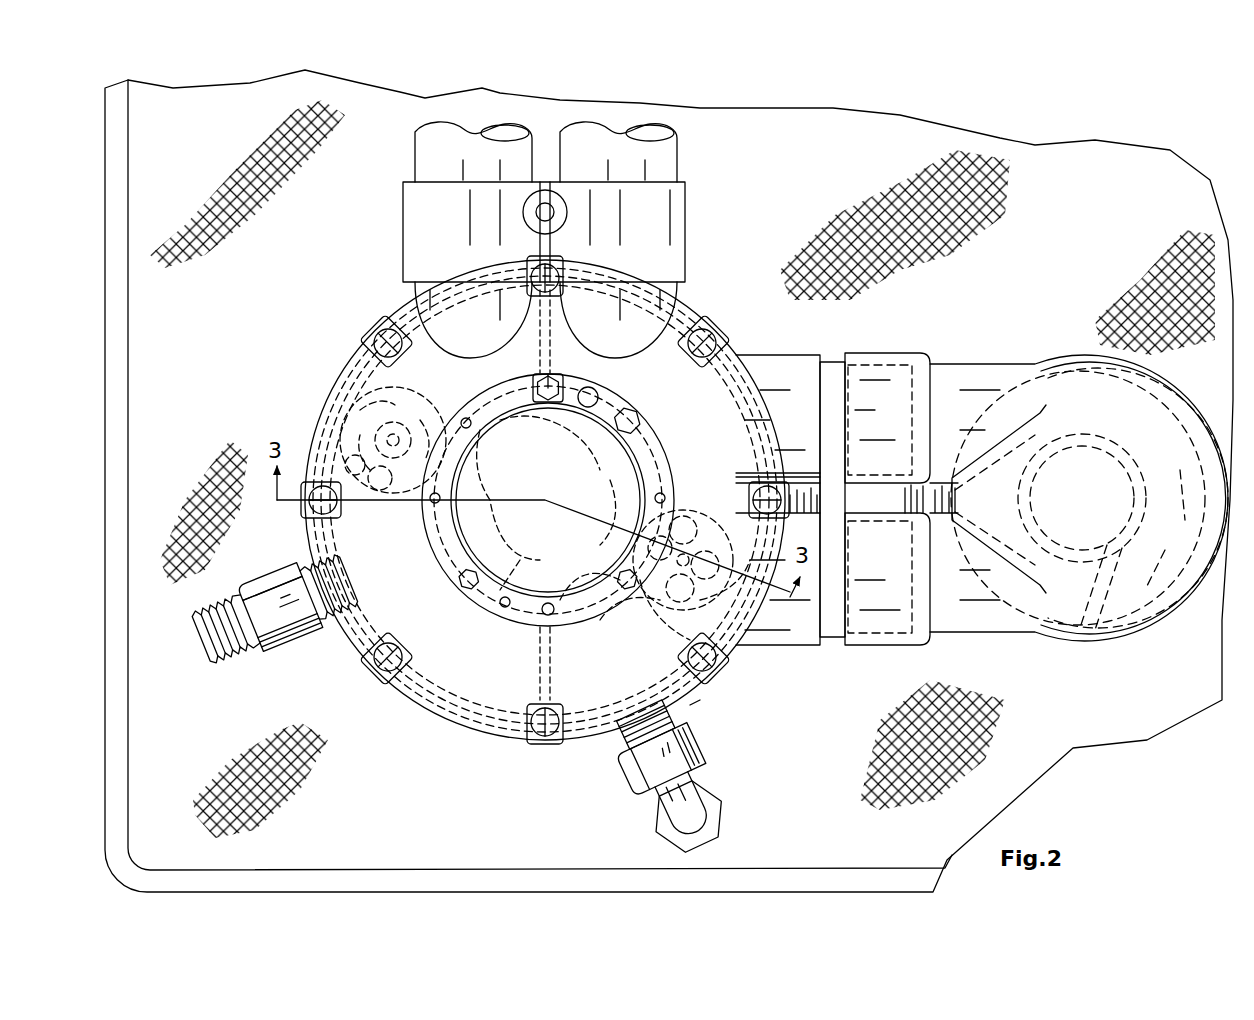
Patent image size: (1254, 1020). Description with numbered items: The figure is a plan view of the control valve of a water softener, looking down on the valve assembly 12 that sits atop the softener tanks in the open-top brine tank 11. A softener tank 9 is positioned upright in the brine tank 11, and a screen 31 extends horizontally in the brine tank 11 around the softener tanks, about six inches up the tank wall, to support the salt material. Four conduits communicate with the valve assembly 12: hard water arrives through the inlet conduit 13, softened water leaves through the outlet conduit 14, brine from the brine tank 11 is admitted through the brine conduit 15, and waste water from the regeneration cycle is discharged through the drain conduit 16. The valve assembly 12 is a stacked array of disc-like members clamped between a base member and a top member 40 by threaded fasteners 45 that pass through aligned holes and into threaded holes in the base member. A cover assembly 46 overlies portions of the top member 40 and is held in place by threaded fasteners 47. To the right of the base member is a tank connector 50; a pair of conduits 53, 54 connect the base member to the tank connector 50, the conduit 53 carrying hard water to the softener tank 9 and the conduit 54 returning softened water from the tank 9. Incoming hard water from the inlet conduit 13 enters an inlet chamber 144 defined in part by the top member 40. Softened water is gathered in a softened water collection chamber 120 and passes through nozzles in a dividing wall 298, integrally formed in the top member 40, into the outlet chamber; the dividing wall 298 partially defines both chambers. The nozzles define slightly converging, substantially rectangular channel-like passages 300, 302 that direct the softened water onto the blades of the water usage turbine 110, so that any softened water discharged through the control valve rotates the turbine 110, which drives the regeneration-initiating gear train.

The softener tank 9 is at (1068, 646).
The brine tank 11 is at (446, 826).
The valve assembly 12 is at (735, 322).
The inlet conduit 13 is at (415, 220).
The outlet conduit 14 is at (680, 205).
The brine conduit 15 is at (696, 766).
The drain conduit 16 is at (328, 626).
The screen 31 is at (235, 356).
The top member 40 is at (455, 665).
The threaded fasteners 45 is at (545, 738).
The cover assembly 46 is at (440, 540).
The threaded fasteners 47 is at (545, 380).
The tank connector 50 is at (1172, 397).
The conduit 53 is at (832, 358).
The conduit 54 is at (836, 648).
The water usage turbine 110 is at (716, 500).
The softened water collection chamber 120 is at (700, 692).
The inlet chamber 144 is at (402, 310).
The dividing wall 298 is at (615, 605).
The channel-like passage 300 is at (650, 630).
The channel-like passage 302 is at (548, 556).